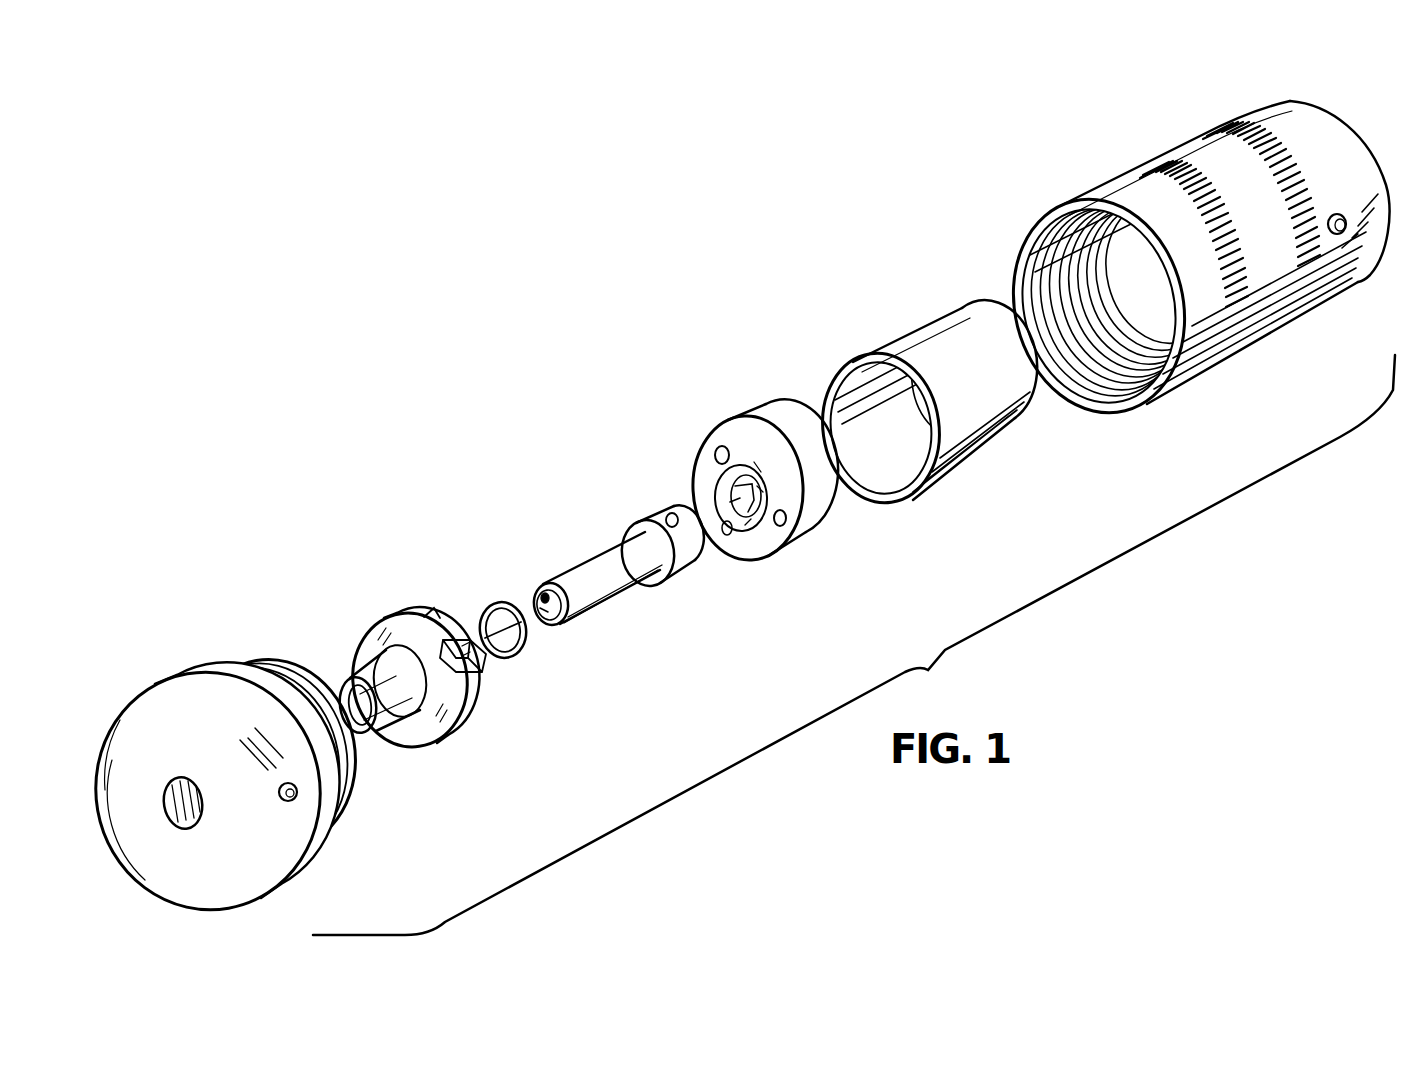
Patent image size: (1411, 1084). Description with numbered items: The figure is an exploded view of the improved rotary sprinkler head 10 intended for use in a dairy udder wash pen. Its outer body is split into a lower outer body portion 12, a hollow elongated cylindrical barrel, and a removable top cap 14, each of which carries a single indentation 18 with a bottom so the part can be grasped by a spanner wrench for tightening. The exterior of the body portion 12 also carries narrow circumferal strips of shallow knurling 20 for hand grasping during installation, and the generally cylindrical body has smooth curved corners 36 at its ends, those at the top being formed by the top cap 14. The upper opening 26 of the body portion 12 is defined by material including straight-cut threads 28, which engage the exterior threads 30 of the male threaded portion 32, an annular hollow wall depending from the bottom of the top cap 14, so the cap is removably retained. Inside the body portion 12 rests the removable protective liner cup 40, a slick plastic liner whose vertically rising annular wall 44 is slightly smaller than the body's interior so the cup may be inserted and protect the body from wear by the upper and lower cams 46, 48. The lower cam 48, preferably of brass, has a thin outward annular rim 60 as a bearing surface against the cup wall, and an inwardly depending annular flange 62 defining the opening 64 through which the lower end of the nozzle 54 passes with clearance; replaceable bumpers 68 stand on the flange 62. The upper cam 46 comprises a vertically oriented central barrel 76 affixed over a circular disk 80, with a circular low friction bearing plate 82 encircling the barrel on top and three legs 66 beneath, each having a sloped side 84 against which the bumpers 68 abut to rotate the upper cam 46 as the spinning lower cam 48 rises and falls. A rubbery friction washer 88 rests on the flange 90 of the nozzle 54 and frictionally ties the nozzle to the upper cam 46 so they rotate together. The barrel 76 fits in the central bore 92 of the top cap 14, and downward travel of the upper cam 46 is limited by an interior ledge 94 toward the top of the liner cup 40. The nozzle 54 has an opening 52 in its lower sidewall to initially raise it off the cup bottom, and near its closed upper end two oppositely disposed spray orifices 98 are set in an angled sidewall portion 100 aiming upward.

The rotary sprinkler head 10 is at (543, 313).
The lower outer body portion 12 is at (1190, 305).
The top cap 14 is at (223, 729).
The indentation 18 is at (1338, 235).
The shallow knurling 20 is at (1290, 337).
The upper opening 26 is at (1087, 387).
The threads 28 is at (1133, 373).
The exterior threads 30 is at (258, 668).
The male threaded portion 32 is at (290, 677).
The smooth curved corners 36 is at (1262, 112).
The removable protective liner cup 40 is at (925, 415).
The annular wall 44 is at (977, 418).
The upper cam 46 is at (446, 634).
The lower cam 48 is at (745, 430).
The opening 52 is at (667, 517).
The nozzle 54 is at (597, 551).
The annular rim 60 is at (740, 497).
The annular flange 62 is at (757, 543).
The opening 64 is at (757, 450).
The legs 66 is at (430, 612).
The bumpers 68 is at (714, 455).
The central barrel 76 is at (388, 722).
The circular disk 80 is at (385, 615).
The low friction bearing plate 82 is at (410, 715).
The sloped side 84 is at (460, 640).
The friction washer 88 is at (517, 648).
The flange 90 is at (660, 567).
The central opening or bore 92 is at (173, 817).
The interior ledge 94 is at (900, 470).
The spray orifices 98 is at (570, 620).
The angled sidewall portion 100 is at (540, 596).